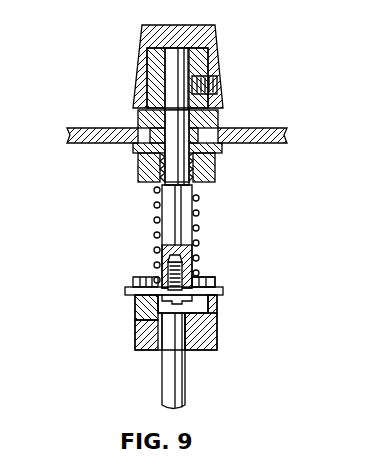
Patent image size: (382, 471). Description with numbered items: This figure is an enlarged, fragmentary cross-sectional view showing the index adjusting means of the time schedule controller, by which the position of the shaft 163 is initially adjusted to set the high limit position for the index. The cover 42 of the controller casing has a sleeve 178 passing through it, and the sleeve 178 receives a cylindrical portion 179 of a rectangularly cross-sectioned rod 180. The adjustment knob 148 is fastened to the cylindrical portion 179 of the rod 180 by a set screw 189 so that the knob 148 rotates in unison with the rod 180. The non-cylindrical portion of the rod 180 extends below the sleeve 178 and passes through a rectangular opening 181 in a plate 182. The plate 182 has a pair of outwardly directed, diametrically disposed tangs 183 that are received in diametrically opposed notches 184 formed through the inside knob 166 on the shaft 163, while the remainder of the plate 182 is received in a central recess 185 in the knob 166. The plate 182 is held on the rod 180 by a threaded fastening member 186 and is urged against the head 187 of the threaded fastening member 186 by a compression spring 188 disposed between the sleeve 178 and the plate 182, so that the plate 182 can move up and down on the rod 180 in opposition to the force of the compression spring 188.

The cover 42 is at (108, 128).
The knob 148 is at (160, 33).
The shaft 163 is at (178, 378).
The knob 166 is at (207, 330).
The sleeve 178 is at (210, 123).
The cylindrical portion 179 is at (175, 110).
The rod 180 is at (185, 223).
The rectangular opening 181 is at (200, 287).
The plate 182 is at (205, 279).
The tangs 183 is at (125, 289).
The notches 184 is at (138, 276).
The central recess 185 is at (203, 307).
The threaded fastening member 186 is at (140, 310).
The head 187 is at (140, 325).
The compression spring 188 is at (155, 207).
The set screw 189 is at (218, 84).